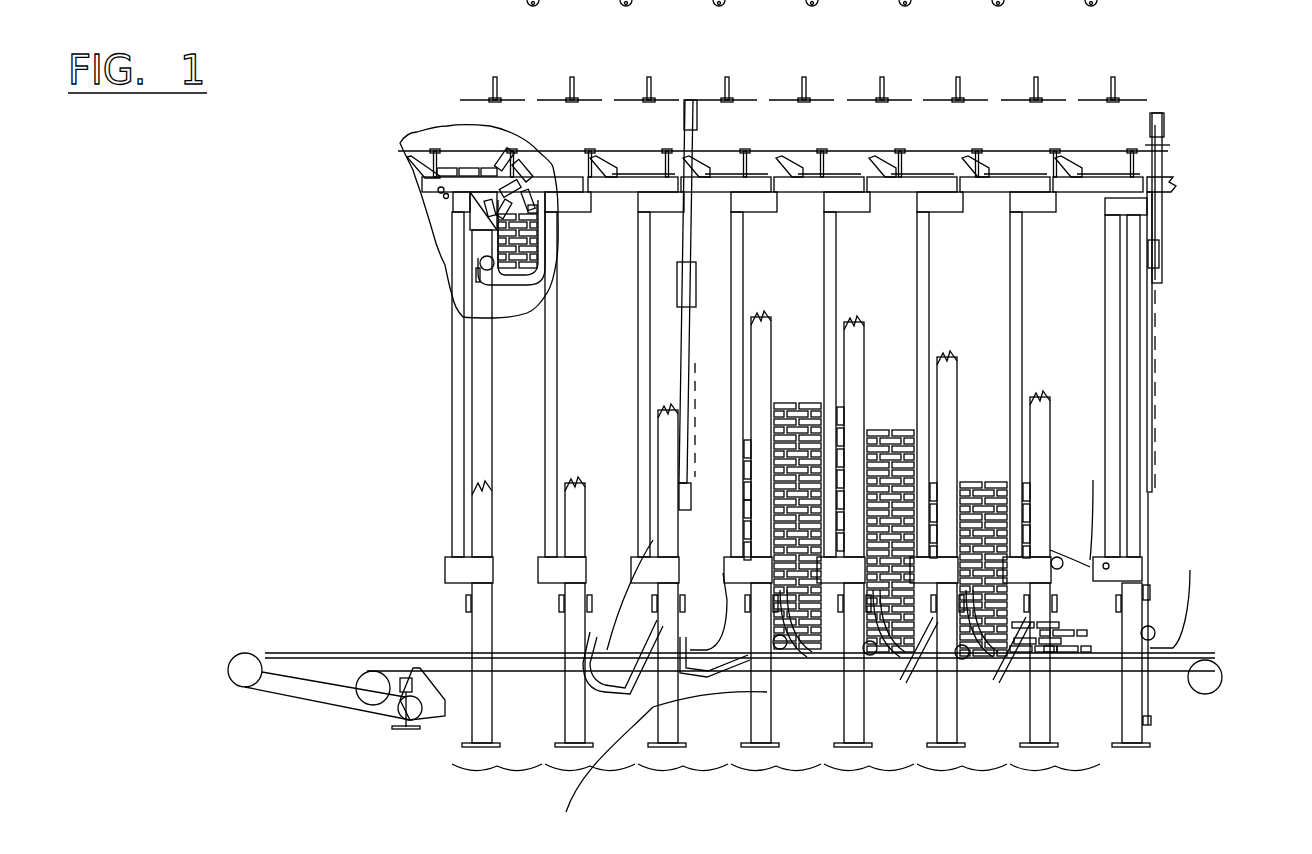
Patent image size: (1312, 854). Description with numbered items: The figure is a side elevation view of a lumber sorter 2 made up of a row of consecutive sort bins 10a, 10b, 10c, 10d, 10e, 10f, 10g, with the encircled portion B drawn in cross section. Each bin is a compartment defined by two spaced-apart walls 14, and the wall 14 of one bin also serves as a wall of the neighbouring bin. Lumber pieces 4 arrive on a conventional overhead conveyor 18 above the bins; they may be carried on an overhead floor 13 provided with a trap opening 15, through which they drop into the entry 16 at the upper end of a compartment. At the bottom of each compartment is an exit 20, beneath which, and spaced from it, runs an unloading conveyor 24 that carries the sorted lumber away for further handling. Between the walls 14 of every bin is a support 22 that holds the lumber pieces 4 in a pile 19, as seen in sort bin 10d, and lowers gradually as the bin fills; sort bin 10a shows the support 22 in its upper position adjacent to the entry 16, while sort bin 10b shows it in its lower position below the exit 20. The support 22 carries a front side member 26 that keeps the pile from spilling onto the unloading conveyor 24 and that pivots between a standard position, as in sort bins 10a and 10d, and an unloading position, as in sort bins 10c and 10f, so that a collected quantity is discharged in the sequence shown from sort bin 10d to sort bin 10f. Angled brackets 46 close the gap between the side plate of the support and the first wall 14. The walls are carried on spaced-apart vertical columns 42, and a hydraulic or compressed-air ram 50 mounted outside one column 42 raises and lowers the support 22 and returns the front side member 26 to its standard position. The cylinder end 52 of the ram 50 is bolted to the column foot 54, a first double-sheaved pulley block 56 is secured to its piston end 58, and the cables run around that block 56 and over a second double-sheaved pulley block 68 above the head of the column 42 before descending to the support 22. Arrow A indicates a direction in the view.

The lumber sorter 2 is at (1215, 181).
The lumber pieces 4 is at (492, 180).
The overhead floor 13 is at (844, 172).
The walls 14 is at (452, 436).
The trap opening 15 is at (523, 165).
The entry 16 is at (497, 215).
The overhead conveyor 18 is at (1095, 151).
The pile 19 is at (804, 402).
The exit 20 is at (512, 569).
The support 22 is at (500, 296).
The unloading conveyor 24 is at (276, 647).
The front side member 26 is at (793, 663).
The vertical columns 42 is at (1141, 415).
The angled brackets 46 is at (562, 587).
The ram 50 is at (1150, 511).
The cylinder end 52 is at (1152, 722).
The column foot 54 is at (1150, 744).
The first double-sheaved pulley block 56 is at (1168, 256).
The piston end 58 is at (1157, 288).
The second double-sheaved pulley block 68 is at (1170, 138).
The direction A is at (656, 693).
The encircled portion B is at (438, 280).
The sort bin 10a is at (497, 504).
The sort bin 10b is at (590, 504).
The sort bin 10c is at (683, 458).
The sort bin 10d is at (778, 504).
The sort bin 10e is at (873, 504).
The sort bin 10f is at (965, 504).
The sort bin 10g is at (1063, 504).